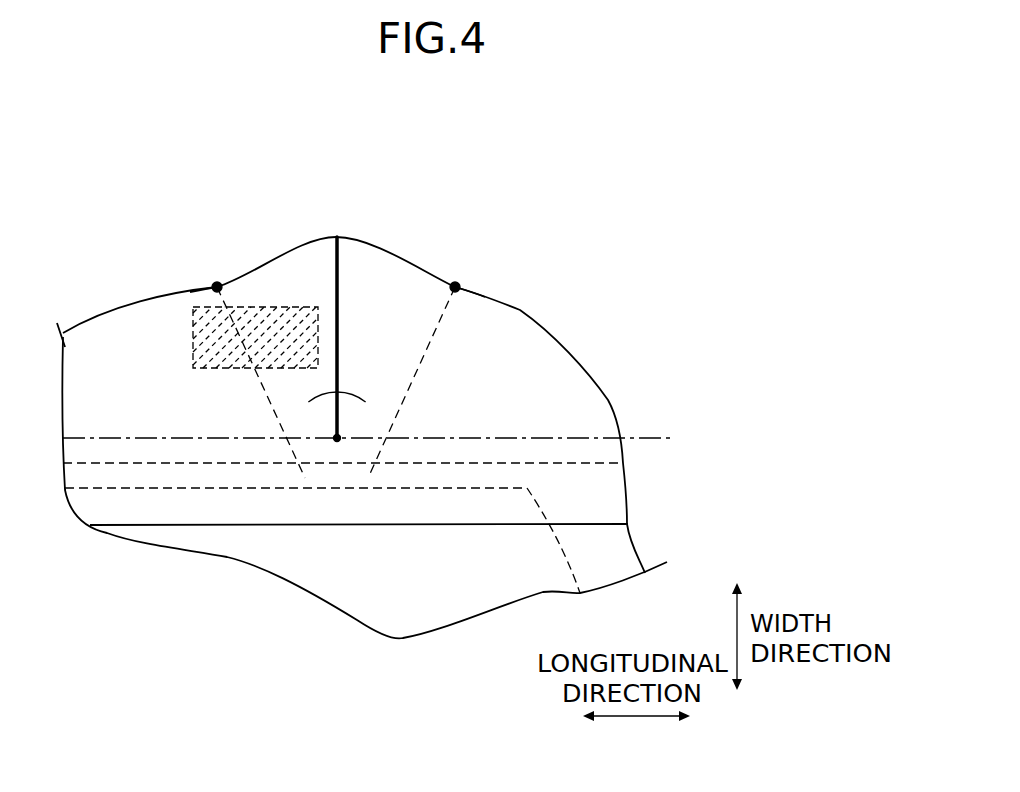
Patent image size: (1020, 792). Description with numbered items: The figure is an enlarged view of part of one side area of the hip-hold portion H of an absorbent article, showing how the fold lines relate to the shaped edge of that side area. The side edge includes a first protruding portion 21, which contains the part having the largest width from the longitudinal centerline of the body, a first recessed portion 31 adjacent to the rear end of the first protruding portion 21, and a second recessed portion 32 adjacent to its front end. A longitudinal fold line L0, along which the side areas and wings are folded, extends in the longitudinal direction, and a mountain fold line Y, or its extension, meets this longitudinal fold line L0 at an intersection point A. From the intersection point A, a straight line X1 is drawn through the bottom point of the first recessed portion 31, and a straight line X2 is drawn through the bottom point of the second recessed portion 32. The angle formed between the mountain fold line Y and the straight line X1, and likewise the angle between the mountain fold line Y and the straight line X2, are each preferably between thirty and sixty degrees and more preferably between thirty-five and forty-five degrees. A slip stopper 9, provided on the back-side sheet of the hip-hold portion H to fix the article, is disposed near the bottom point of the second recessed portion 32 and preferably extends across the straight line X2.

The slip stopper 9 is at (190, 293).
The first protruding portion 21 is at (336, 237).
The first recessed portion 31 is at (470, 290).
The second recessed portion 32 is at (222, 285).
The hip-hold portion H is at (195, 214).
The longitudinal fold line L0 is at (383, 440).
The mountain fold line Y is at (340, 255).
The straight line X1 is at (459, 283).
The straight line X2 is at (213, 282).
The intersection point A is at (337, 438).